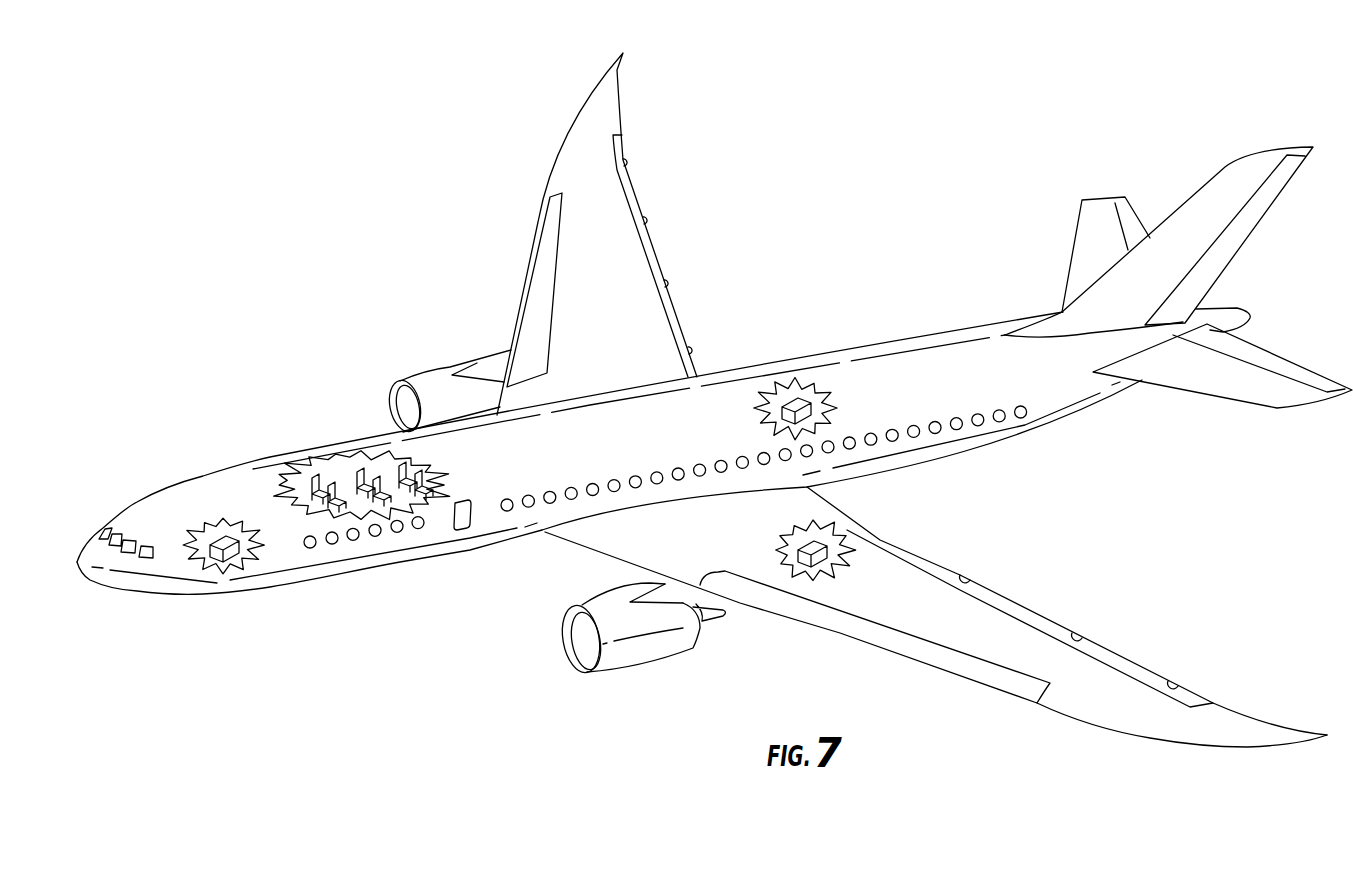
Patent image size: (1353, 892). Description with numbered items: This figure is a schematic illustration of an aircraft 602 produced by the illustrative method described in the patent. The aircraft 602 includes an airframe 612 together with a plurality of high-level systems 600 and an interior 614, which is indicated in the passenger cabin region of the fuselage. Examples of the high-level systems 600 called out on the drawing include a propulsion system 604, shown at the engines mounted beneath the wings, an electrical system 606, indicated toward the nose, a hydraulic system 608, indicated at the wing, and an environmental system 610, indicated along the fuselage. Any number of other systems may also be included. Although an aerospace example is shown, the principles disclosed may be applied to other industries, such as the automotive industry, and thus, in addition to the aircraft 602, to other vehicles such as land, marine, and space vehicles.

The high-level systems 600 is at (714, 400).
The aircraft 602 is at (306, 291).
The propulsion system 604 is at (438, 385).
The electrical system 606 is at (222, 540).
The hydraulic system 608 is at (820, 535).
The environmental system 610 is at (790, 404).
The airframe 612 is at (360, 426).
The interior 614 is at (343, 495).